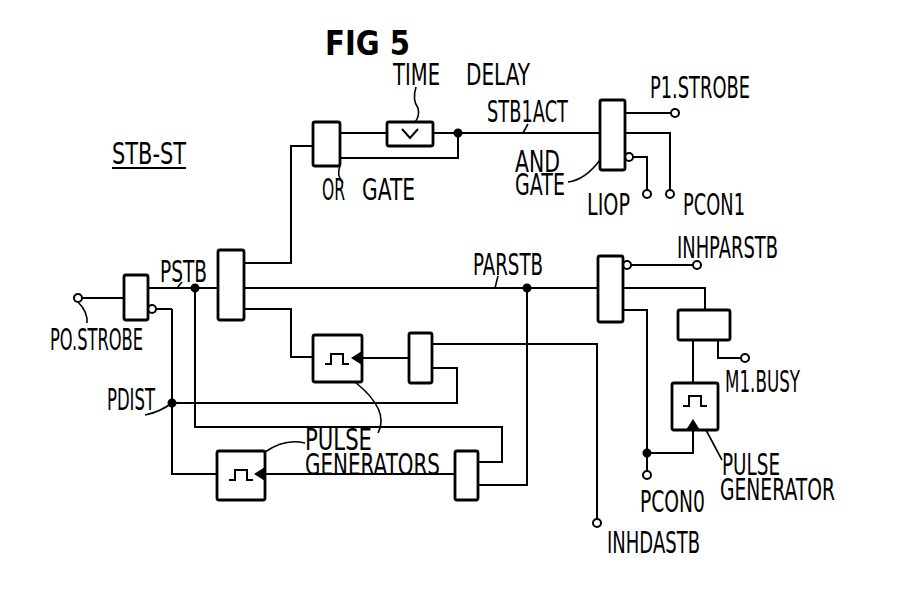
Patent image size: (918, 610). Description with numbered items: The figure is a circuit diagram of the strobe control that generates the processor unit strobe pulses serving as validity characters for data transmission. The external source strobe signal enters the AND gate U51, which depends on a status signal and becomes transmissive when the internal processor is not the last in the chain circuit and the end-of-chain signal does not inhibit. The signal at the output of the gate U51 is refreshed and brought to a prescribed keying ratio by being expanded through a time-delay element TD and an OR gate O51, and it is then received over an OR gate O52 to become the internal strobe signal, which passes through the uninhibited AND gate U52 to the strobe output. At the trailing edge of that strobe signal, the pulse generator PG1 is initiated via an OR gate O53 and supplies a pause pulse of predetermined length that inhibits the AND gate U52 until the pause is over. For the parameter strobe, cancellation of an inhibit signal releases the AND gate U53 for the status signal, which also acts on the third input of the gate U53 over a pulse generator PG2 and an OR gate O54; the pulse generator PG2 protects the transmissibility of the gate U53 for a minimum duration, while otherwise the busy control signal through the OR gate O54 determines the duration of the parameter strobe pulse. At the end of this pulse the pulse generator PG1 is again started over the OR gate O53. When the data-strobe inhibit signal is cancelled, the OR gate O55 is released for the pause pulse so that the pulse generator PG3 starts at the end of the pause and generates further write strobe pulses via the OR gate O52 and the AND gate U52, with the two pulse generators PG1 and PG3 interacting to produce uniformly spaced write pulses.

The OR gate O51 is at (331, 126).
The time-delay element TD is at (410, 134).
The AND gate U51 is at (611, 116).
The OR gate O52 is at (235, 267).
The AND gate U52 is at (137, 280).
The AND gate U53 is at (616, 272).
The OR gate O53 is at (462, 495).
The OR gate O54 is at (731, 329).
The OR gate O55 is at (429, 342).
The pulse generator PG1 is at (241, 495).
The pulse generator PG2 is at (721, 407).
The pulse generator PG3 is at (312, 366).